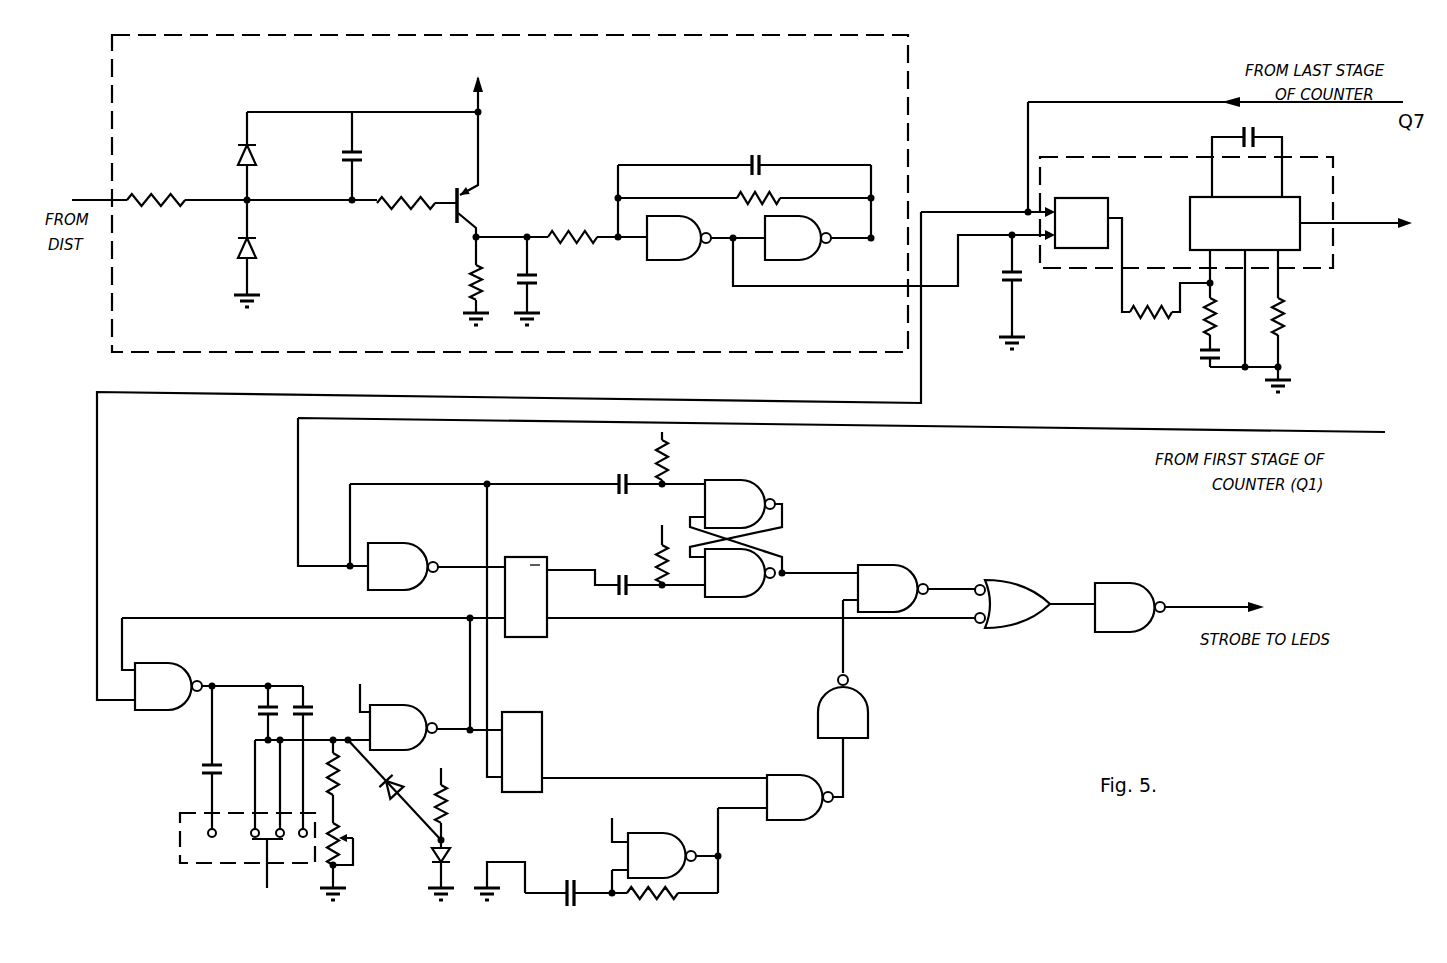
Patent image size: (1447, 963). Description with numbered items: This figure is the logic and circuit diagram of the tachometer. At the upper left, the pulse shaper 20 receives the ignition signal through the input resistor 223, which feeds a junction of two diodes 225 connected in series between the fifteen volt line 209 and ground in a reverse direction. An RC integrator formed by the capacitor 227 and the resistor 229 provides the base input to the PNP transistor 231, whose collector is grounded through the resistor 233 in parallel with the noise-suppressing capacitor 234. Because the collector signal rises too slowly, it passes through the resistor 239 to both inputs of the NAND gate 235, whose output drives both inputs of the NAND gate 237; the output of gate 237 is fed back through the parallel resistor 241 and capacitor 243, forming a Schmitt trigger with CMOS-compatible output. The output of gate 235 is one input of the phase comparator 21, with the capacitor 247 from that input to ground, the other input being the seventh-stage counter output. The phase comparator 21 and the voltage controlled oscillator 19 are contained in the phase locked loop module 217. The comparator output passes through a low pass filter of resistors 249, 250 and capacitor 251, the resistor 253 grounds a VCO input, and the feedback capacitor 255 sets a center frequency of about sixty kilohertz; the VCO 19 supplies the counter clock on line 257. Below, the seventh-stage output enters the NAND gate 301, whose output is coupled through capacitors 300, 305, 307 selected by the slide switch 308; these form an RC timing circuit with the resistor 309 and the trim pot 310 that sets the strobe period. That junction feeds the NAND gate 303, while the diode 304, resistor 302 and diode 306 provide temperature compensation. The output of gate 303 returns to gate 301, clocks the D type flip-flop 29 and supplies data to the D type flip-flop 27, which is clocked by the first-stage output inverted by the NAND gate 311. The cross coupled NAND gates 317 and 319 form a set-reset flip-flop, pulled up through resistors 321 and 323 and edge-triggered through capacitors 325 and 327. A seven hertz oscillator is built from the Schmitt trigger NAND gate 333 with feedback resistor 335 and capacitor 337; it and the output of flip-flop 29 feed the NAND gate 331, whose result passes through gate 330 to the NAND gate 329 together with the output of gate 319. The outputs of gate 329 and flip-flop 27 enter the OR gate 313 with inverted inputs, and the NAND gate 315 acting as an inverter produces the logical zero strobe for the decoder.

The pulse shaper 20 is at (912, 78).
The line 209 is at (545, 95).
The input resistor 223 is at (190, 178).
The clamping diodes 225 is at (260, 157).
The capacitor 227 is at (365, 154).
The resistor 229 is at (400, 217).
The PNP transistor 231 is at (455, 186).
The resistor 233 is at (468, 287).
The capacitor 234 is at (538, 293).
The NAND gate 235 is at (684, 262).
The NAND gate 237 is at (820, 258).
The resistor 239 is at (587, 216).
The resistor 241 is at (780, 189).
The capacitor 243 is at (760, 153).
The capacitor 247 is at (1000, 281).
The phase locked loop module 217 is at (1186, 195).
The phase comparator 21 is at (1112, 214).
The voltage controlled oscillator 19 is at (1265, 196).
The feedback capacitor 255 is at (1240, 130).
The line 257 is at (1362, 248).
The resistor 249 is at (1152, 320).
The resistor 250 is at (1203, 323).
The capacitor 251 is at (1200, 357).
The resistor 253 is at (1290, 327).
The first D type flip-flop 27 is at (540, 556).
The second D type flip-flop 29 is at (541, 711).
The capacitor 300 is at (200, 762).
The first NAND gate 301 is at (163, 700).
The resistor 302 is at (453, 802).
The NAND gate 303 is at (433, 708).
The diode 304 is at (394, 790).
The capacitor 305 is at (255, 696).
The diode 306 is at (452, 855).
The capacitor 307 is at (318, 697).
The slide switch 308 is at (194, 866).
The resistor 309 is at (355, 790).
The trim pot 310 is at (342, 828).
The NAND gate 311 is at (430, 532).
The OR gate 313 is at (1020, 586).
The NAND gate 315 is at (1127, 596).
The NAND gate 317 is at (750, 488).
The NAND gate 319 is at (752, 590).
The resistor 321 is at (673, 470).
The resistor 323 is at (650, 556).
The capacitor 325 is at (614, 483).
The capacitor 327 is at (615, 578).
The NAND gate 329 is at (920, 558).
The gate 330 is at (870, 707).
The NAND gate 331 is at (812, 822).
The NAND gate 333 is at (682, 818).
The resistor 335 is at (680, 898).
The capacitor 337 is at (571, 878).